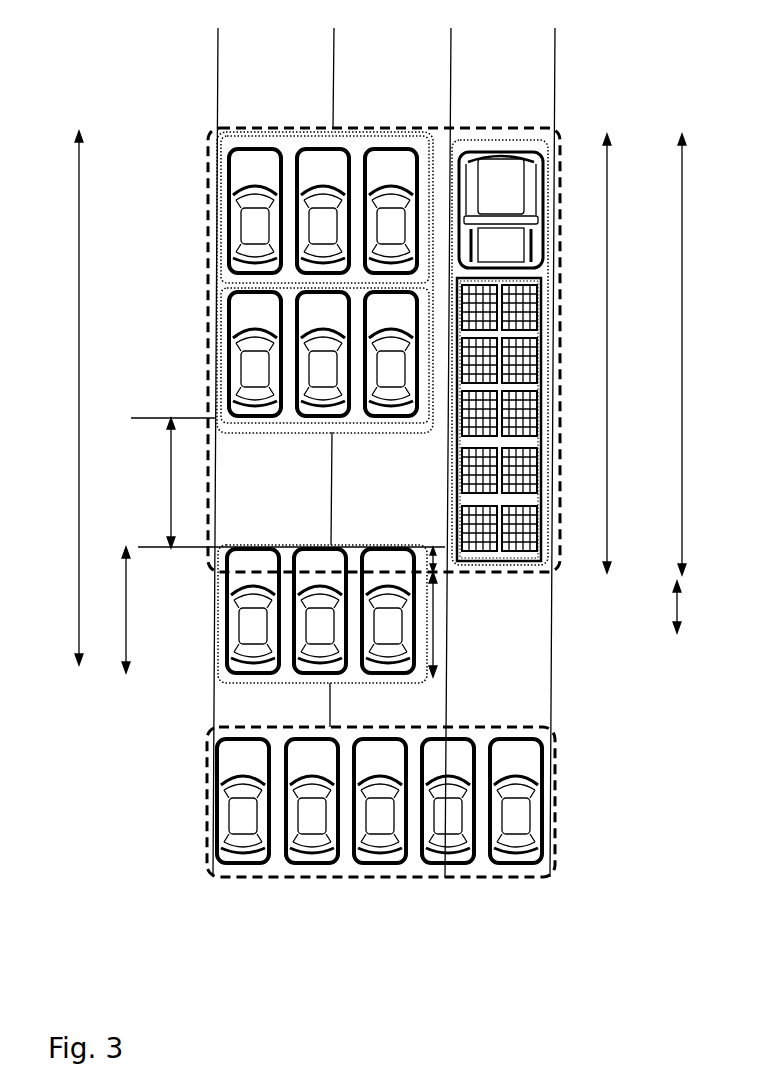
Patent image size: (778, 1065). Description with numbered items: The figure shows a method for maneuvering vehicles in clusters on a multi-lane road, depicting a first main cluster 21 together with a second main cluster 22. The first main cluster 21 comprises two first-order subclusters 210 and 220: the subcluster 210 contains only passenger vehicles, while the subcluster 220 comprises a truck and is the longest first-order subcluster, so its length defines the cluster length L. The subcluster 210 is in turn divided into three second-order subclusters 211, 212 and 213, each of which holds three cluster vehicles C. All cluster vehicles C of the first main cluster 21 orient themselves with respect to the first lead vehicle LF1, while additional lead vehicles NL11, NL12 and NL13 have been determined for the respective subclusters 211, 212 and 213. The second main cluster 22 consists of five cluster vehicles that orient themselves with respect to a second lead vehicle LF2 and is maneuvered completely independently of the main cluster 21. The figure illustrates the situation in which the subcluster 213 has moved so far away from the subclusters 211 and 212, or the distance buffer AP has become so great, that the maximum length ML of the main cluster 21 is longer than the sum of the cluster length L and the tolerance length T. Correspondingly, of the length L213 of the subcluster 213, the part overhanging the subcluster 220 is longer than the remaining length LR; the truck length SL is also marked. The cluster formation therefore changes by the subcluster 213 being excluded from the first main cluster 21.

The first main cluster 21 is at (208, 165).
The 1st-order subcluster 210 is at (358, 432).
The 2nd-order subcluster 211 is at (220, 278).
The 2nd-order subcluster 212 is at (212, 418).
The 2nd-order subcluster 213 is at (217, 616).
The 1st-order subcluster 220 is at (520, 574).
The second main cluster 22 is at (198, 772).
The cluster vehicle C is at (325, 146).
The maximum length ML is at (83, 152).
The first lead vehicle LF1 is at (325, 173).
The additional lead vehicle NL11 is at (255, 148).
The additional lead vehicle NL12 is at (228, 340).
The additional lead vehicle NL13 is at (220, 665).
The second lead vehicle LF2 is at (215, 835).
The distance buffer AP is at (168, 487).
The length of the 2nd-order subcluster 213 L213 is at (127, 583).
The remaining length LR is at (430, 548).
The truck length SL is at (608, 302).
The cluster length L is at (682, 217).
The tolerance length T is at (683, 615).